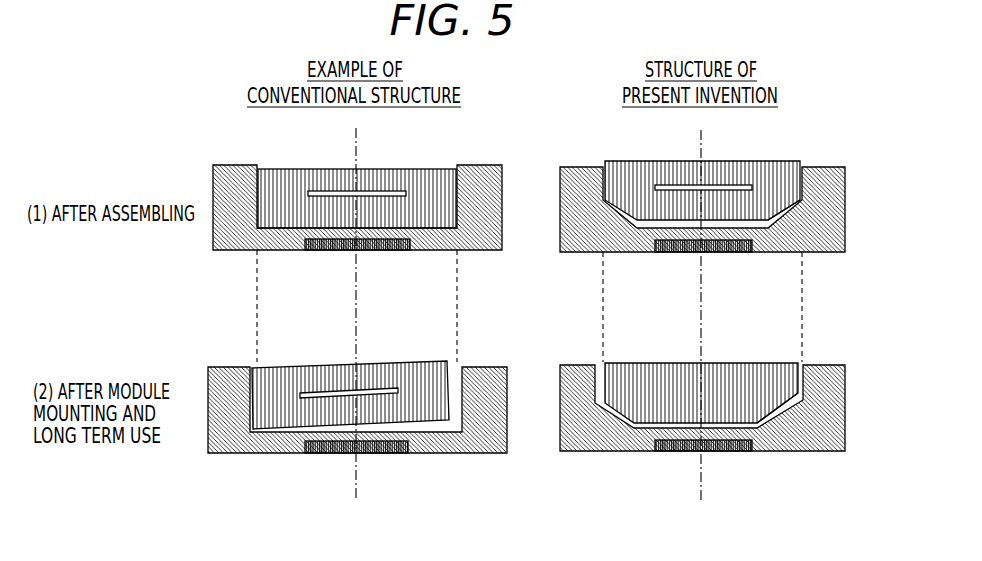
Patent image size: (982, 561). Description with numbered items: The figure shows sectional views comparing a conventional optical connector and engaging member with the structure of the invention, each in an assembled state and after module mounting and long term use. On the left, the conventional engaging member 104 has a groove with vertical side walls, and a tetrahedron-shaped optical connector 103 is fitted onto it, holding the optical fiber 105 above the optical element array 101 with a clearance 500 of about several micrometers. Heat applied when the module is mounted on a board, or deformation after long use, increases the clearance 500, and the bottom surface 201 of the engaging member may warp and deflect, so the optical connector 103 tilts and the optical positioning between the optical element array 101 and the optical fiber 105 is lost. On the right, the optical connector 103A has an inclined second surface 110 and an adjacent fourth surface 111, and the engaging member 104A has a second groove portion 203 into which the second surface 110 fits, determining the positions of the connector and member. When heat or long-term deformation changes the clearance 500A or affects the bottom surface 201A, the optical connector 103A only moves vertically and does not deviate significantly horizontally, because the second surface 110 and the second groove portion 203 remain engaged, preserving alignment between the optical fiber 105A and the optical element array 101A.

The optical element array 101 is at (390, 252).
The optical connector 103 is at (296, 193).
The engaging member 104 is at (247, 233).
The optical fiber 105 is at (385, 191).
The bottom surface of the engaging member 201 is at (438, 443).
The clearance 500 is at (455, 186).
The optical element array 101A is at (735, 252).
The optical connector 103A is at (641, 184).
The engaging member 104A is at (594, 229).
The optical fiber 105A is at (712, 186).
The second surface 110 is at (781, 205).
The fourth surface 111 is at (800, 370).
The bottom surface of the engaging member 201A is at (757, 446).
The second groove portion 203 is at (826, 249).
The clearance 500A is at (797, 173).